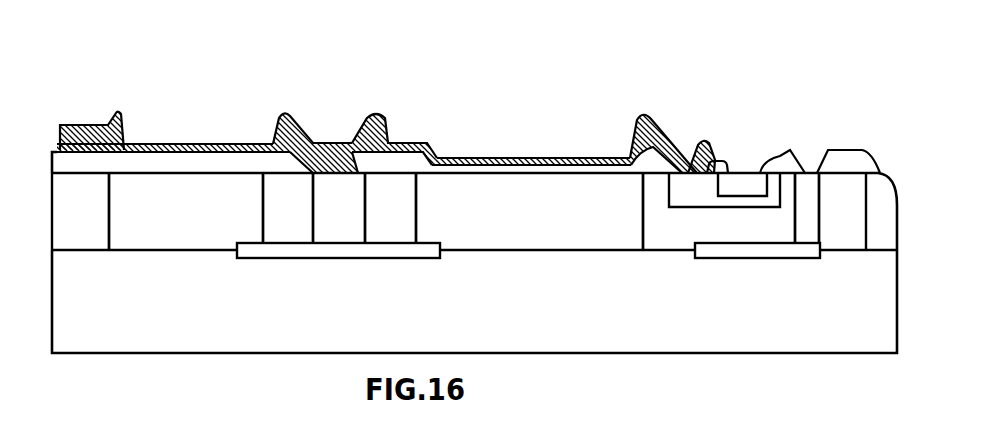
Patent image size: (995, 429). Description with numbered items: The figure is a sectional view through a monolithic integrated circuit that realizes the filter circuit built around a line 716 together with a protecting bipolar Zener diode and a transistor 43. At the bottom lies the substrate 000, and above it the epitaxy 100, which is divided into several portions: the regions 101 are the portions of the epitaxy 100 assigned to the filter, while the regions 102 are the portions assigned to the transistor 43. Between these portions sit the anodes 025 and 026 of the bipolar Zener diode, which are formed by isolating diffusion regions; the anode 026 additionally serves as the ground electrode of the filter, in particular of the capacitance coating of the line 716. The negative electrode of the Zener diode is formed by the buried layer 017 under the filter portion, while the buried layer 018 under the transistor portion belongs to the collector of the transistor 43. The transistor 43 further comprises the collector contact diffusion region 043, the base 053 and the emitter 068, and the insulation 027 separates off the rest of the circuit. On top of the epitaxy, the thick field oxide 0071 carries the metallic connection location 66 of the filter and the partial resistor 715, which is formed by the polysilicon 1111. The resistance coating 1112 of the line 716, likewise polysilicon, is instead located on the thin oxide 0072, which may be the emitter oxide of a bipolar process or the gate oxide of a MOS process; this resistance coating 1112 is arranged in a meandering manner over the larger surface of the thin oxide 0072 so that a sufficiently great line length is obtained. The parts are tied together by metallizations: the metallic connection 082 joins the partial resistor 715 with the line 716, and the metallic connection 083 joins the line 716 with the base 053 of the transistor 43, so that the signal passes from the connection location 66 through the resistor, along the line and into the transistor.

The substrate 000 is at (860, 344).
The thick field oxide 0071 is at (138, 165).
The thin oxide 0072 is at (571, 166).
The polysilicon 1111 is at (183, 142).
The resistance coating 1112 is at (492, 158).
The metallic connection location 66 is at (78, 123).
The partial resistor 715 is at (240, 142).
The line 716 is at (550, 158).
The metallic connection 082 is at (385, 133).
The metallic connection 083 is at (668, 132).
The base 053 is at (710, 153).
The transistor 43 is at (762, 154).
The insulation 027 is at (877, 190).
The epitaxy 100 is at (92, 228).
The anode 026 is at (196, 228).
The regions 101 is at (298, 228).
The anode 025 is at (353, 228).
The regions 102 is at (683, 243).
The collector contact diffusion region 043 is at (807, 223).
The emitter 068 is at (733, 190).
The buried layer 017 is at (272, 248).
The buried layer 018 is at (742, 248).